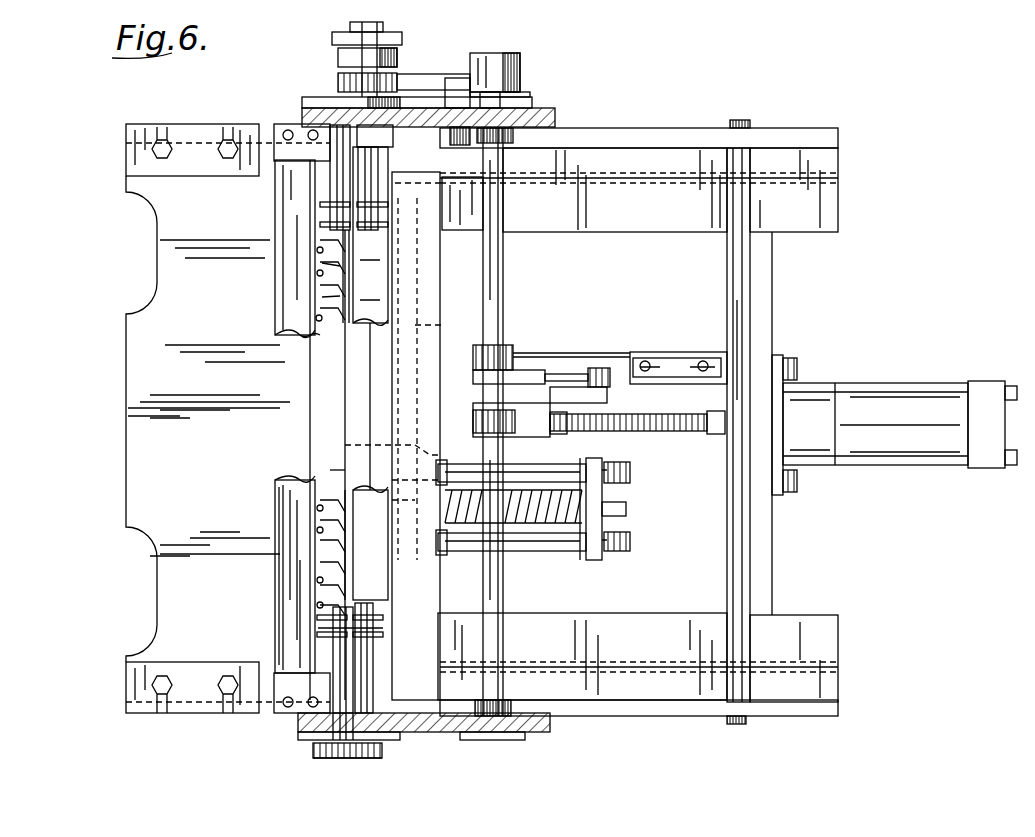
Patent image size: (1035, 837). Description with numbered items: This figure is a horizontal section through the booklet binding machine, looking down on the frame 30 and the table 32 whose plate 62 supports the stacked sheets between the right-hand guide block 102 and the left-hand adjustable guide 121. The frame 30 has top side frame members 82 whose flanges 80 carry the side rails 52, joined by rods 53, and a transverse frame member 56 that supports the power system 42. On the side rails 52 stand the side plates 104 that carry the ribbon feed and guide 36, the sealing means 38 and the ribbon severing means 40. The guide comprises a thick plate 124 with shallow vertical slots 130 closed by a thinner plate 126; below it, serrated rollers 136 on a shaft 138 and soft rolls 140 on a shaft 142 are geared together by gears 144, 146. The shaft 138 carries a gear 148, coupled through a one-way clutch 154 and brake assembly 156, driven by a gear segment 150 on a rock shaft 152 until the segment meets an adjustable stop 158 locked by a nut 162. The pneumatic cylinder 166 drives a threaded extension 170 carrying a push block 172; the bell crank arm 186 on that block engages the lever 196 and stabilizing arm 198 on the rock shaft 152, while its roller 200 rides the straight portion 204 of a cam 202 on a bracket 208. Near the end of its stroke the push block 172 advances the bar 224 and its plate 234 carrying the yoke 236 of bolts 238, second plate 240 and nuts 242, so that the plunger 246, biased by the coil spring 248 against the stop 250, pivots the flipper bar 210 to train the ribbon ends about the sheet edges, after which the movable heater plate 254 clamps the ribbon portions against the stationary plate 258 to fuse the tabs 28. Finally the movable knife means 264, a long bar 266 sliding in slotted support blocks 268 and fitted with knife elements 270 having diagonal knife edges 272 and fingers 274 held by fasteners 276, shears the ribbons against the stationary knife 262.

The tabs 28 is at (316, 432).
The frame 30 is at (641, 122).
The table 32 is at (200, 357).
The ribbon feed and guide 36 is at (300, 610).
The sealing means 38 is at (448, 302).
The ribbon severing means 40 is at (272, 261).
The power system 42 is at (852, 377).
The side rails 52 is at (694, 128).
The rods 53 is at (748, 254).
The transverse frame member 56 is at (760, 546).
The plate 62 is at (132, 412).
The top flange 80 is at (822, 196).
The top side frame members 82 is at (846, 162).
The bar or block 102 is at (190, 678).
The side plates 104 is at (548, 110).
The adjustable guide 121 is at (138, 158).
The plate 124 is at (353, 173).
The plate 126 is at (313, 190).
The slots 130 is at (350, 212).
The serrated rollers 136 is at (398, 605).
The shaft 138 is at (370, 683).
The soft rolls 140 is at (320, 633).
The shaft 142 is at (330, 683).
The gear 144 is at (313, 753).
The gear 146 is at (380, 758).
The gear 148 is at (338, 82).
The gear segment 150 is at (420, 82).
The rock shaft 152 is at (520, 100).
The one-way clutch 154 is at (338, 60).
The brake assembly 156 is at (335, 38).
The adjustable stop 158 is at (455, 90).
The nut 162 is at (450, 137).
The pneumatic cylinder 166 is at (912, 436).
The threaded extension 170 is at (670, 430).
The push block 172 is at (576, 500).
The arm 186 is at (558, 372).
The lever 196 is at (520, 370).
The stabilizing arm 198 is at (478, 412).
The roller 200 is at (600, 370).
The cam 202 is at (688, 362).
The straight portion 204 is at (668, 380).
The bracket 208 is at (645, 362).
The flipper bar 210 is at (350, 468).
The bar 224 is at (447, 326).
The plate 234 is at (377, 446).
The yoke 236 is at (596, 452).
The bolts 238 is at (526, 468).
The second plate 240 is at (600, 486).
The nuts 242 is at (612, 463).
The plunger 246 is at (622, 512).
The coil spring 248 is at (560, 538).
The washer or stop 250 is at (452, 480).
The metallic plate 254 is at (382, 348).
The stationary plate 258 is at (322, 406).
The stationary knife 262 is at (372, 258).
The movable knife means 264 is at (272, 298).
The long bar 266 is at (290, 497).
The slotted support blocks 268 is at (277, 140).
The knife elements 270 is at (330, 266).
The diagonal knife edges 272 is at (320, 522).
The fingers 274 is at (366, 545).
The fasteners 276 is at (318, 580).